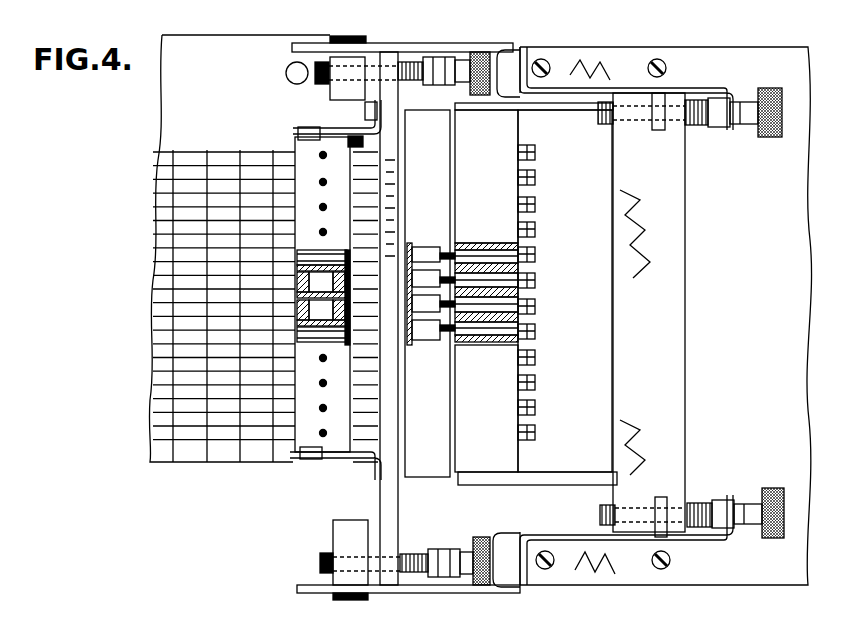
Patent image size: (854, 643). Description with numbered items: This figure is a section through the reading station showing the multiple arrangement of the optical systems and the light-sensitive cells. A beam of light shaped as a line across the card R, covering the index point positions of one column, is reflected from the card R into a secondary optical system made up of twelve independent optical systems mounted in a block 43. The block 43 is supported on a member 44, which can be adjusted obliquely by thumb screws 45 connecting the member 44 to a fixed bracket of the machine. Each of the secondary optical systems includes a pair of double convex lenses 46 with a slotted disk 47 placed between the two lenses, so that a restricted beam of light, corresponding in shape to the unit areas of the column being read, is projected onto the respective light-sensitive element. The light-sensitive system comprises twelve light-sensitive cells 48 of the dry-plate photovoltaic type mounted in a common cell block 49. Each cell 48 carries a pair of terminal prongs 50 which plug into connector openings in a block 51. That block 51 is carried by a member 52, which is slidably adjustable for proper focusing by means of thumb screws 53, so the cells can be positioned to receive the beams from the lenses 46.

The card R is at (175, 414).
The block 43 is at (340, 433).
The member 44 is at (390, 377).
The thumb screws 45 is at (415, 60).
The double convex lenses 46 is at (335, 305).
The slotted disk 47 is at (316, 322).
The light-sensitive cells 48 is at (432, 308).
The cell block 49 is at (433, 460).
The terminal prongs 50 is at (482, 300).
The block 51 is at (502, 452).
The member 52 is at (686, 376).
The thumb screws 53 is at (708, 127).